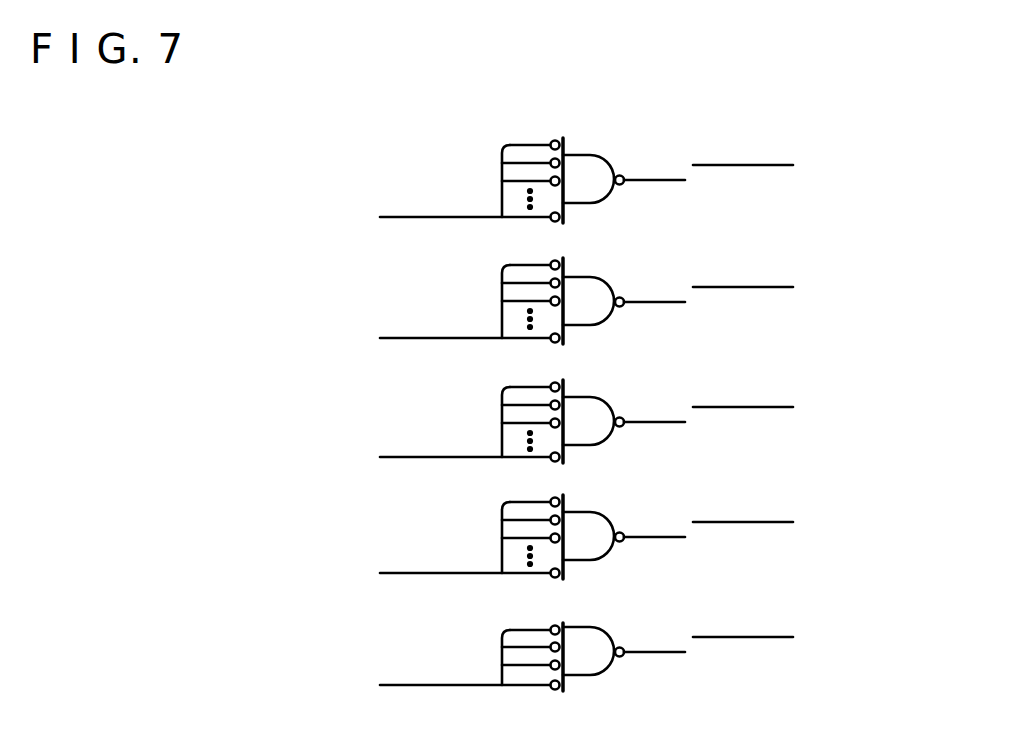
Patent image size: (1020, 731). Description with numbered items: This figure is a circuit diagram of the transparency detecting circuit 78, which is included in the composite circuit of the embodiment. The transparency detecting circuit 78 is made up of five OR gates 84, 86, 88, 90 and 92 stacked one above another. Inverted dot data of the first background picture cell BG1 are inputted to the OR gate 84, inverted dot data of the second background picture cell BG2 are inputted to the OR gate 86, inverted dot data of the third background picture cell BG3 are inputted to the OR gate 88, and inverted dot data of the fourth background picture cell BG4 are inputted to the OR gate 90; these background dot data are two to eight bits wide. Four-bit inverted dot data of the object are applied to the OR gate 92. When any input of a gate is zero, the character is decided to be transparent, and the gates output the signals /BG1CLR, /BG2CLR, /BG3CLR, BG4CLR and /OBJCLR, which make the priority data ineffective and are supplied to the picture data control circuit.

The transparency detecting circuit 78 is at (253, 271).
The OR gate 84 is at (591, 159).
The OR gate 86 is at (591, 281).
The OR gate 88 is at (591, 401).
The OR gate 90 is at (591, 516).
The OR gate 92 is at (588, 631).